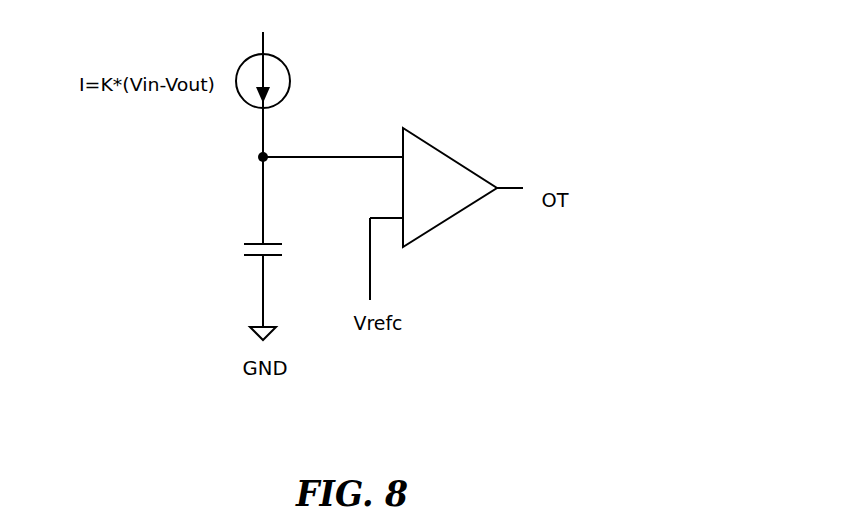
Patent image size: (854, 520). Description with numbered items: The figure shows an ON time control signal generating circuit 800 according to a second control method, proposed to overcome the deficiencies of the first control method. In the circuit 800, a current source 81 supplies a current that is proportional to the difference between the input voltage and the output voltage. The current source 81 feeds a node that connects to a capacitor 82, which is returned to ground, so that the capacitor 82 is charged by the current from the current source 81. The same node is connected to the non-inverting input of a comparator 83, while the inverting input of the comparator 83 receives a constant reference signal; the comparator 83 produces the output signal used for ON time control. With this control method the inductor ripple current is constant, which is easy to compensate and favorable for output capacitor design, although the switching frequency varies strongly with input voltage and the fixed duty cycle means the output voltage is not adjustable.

The ON time control signal generating circuit 800 is at (583, 80).
The current source 81 is at (298, 79).
The capacitor 82 is at (233, 251).
The comparator 83 is at (457, 162).